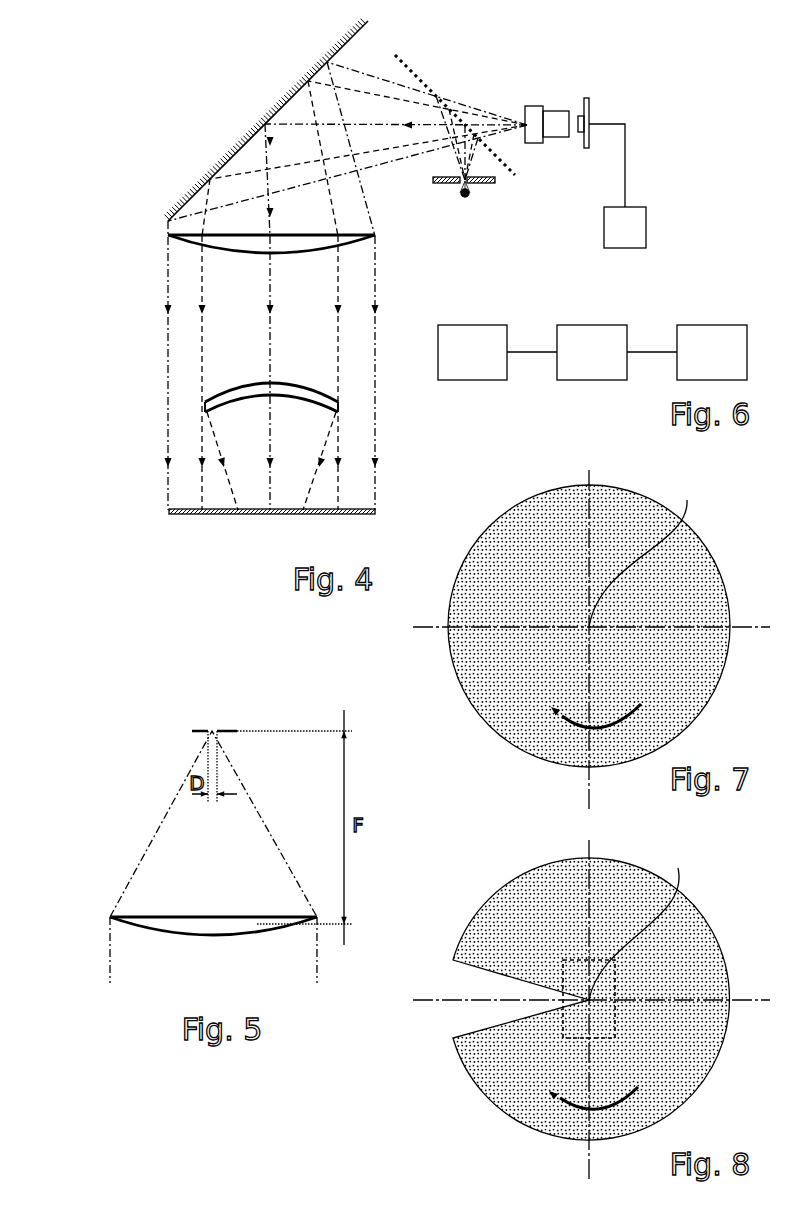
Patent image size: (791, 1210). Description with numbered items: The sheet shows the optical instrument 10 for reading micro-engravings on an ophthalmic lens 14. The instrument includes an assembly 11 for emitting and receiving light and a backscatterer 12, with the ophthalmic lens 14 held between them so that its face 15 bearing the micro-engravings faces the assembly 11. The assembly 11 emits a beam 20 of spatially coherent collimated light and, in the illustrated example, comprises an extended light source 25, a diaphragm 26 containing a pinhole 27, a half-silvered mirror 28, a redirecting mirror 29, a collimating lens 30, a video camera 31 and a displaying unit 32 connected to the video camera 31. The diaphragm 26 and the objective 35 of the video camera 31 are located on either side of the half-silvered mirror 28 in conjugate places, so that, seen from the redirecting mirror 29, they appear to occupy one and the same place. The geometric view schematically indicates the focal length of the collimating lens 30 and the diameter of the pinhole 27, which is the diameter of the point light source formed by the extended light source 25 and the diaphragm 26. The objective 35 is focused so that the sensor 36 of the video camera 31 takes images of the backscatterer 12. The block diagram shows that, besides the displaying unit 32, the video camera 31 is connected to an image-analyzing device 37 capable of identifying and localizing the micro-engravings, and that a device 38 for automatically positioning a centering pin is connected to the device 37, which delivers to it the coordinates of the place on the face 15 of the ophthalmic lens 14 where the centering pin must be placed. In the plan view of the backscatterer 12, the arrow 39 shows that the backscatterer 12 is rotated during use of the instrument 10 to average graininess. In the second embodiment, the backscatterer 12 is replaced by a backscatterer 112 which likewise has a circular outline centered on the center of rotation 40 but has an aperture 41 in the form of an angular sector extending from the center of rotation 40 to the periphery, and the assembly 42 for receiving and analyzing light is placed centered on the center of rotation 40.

In FIG. 4, the optical instrument 10 is at (86, 111).
In FIG. 4, the assembly for emitting and receiving light 11 is at (179, 171).
In FIG. 4, the backscatterer 12 is at (257, 514).
In FIG. 7, the backscatterer 12 is at (556, 503).
In FIG. 4, the ophthalmic lens 14 is at (318, 394).
In FIG. 4, the face 15 is at (298, 374).
In FIG. 4, the beam 20 is at (225, 360).
In FIG. 5, the beam 20 is at (120, 962).
In FIG. 4, the extended light source 25 is at (463, 196).
In FIG. 4, the diaphragm 26 is at (495, 184).
In FIG. 5, the diaphragm 26 is at (207, 729).
In FIG. 4, the pinhole 27 is at (466, 185).
In FIG. 5, the pinhole 27 is at (213, 727).
In FIG. 4, the half-silvered mirror 28 is at (408, 66).
In FIG. 4, the redirecting mirror 29 is at (270, 115).
In FIG. 4, the collimating lens 30 is at (233, 247).
In FIG. 5, the collimating lens 30 is at (148, 926).
In FIG. 4, the video camera 31 is at (557, 93).
In FIG. 6, the video camera 31 is at (462, 363).
In FIG. 4, the displaying unit 32 is at (615, 238).
In FIG. 4, the objective 35 is at (556, 128).
In FIG. 4, the sensor 36 is at (589, 106).
In FIG. 6, the image-analyzing device 37 is at (582, 363).
In FIG. 6, the device for automatically positioning a centering pin 38 is at (702, 363).
In FIG. 7, the arrow 39 is at (616, 728).
In FIG. 8, the arrow 39 is at (612, 1115).
In FIG. 7, the center of rotation 40 is at (644, 550).
In FIG. 8, the center of rotation 40 is at (646, 920).
In FIG. 8, the aperture 41 is at (477, 1013).
In FIG. 8, the assembly for receiving and analyzing light 42 is at (603, 1013).
In FIG. 8, the backscatterer 112 is at (523, 889).